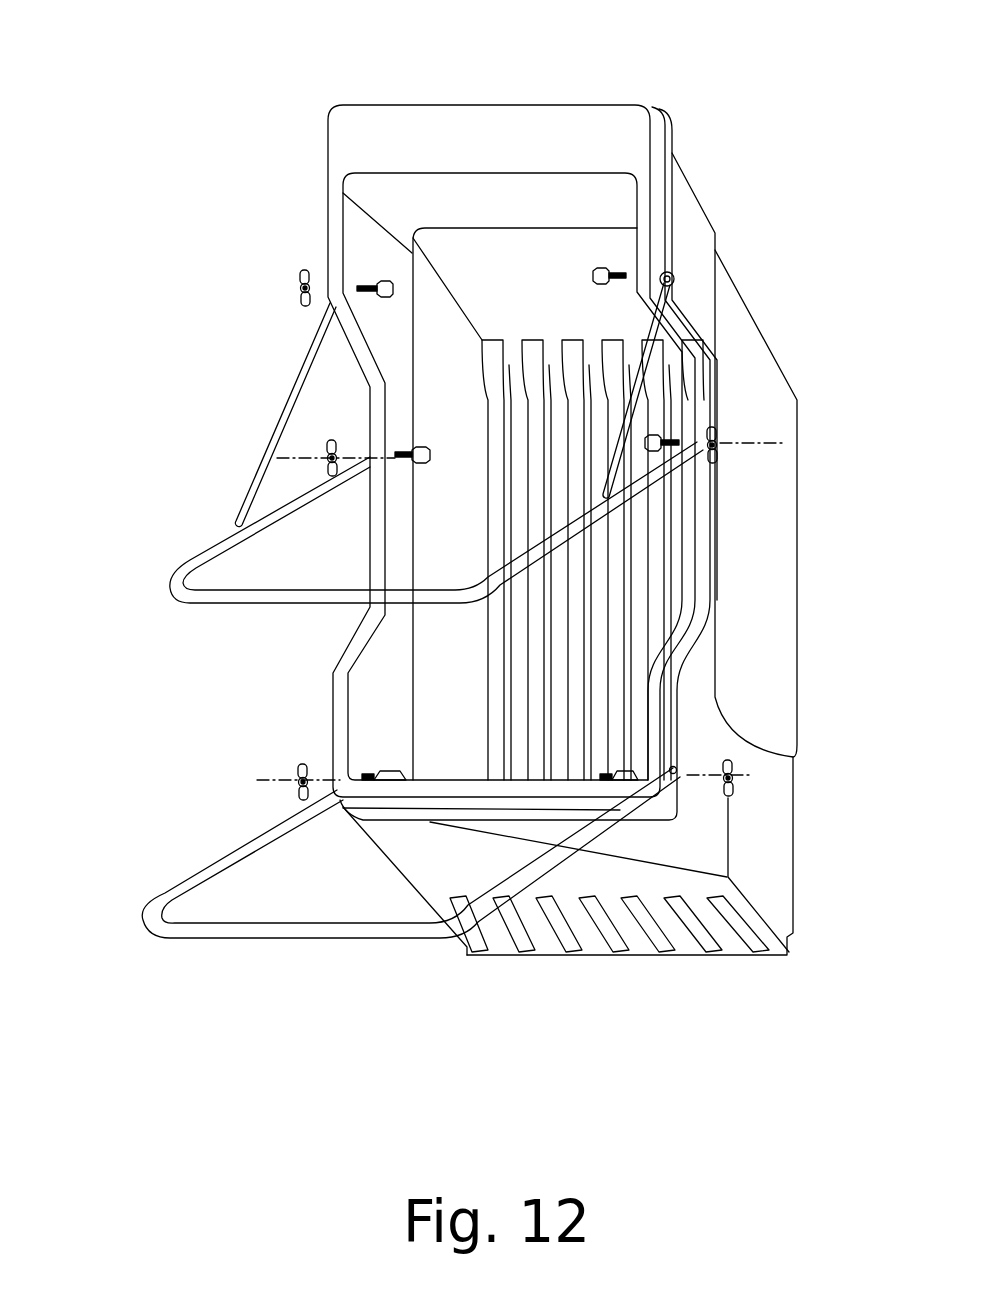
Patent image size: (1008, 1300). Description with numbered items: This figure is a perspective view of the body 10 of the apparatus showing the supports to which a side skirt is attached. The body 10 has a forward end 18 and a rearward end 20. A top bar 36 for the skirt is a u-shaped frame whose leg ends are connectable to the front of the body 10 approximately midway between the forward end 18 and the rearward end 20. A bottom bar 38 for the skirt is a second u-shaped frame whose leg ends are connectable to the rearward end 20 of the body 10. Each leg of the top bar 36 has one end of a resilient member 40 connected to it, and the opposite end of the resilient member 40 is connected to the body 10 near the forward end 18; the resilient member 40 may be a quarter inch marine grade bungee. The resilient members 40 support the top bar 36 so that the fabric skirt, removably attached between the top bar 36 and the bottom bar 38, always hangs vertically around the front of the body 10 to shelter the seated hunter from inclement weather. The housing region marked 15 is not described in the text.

The body 10 is at (781, 166).
The housing 15 is at (794, 578).
The forward end 18 is at (438, 104).
The rearward end 20 is at (690, 782).
The top bar 36 is at (172, 578).
The bottom bar 38 is at (162, 897).
The resilient member 40 is at (657, 336).